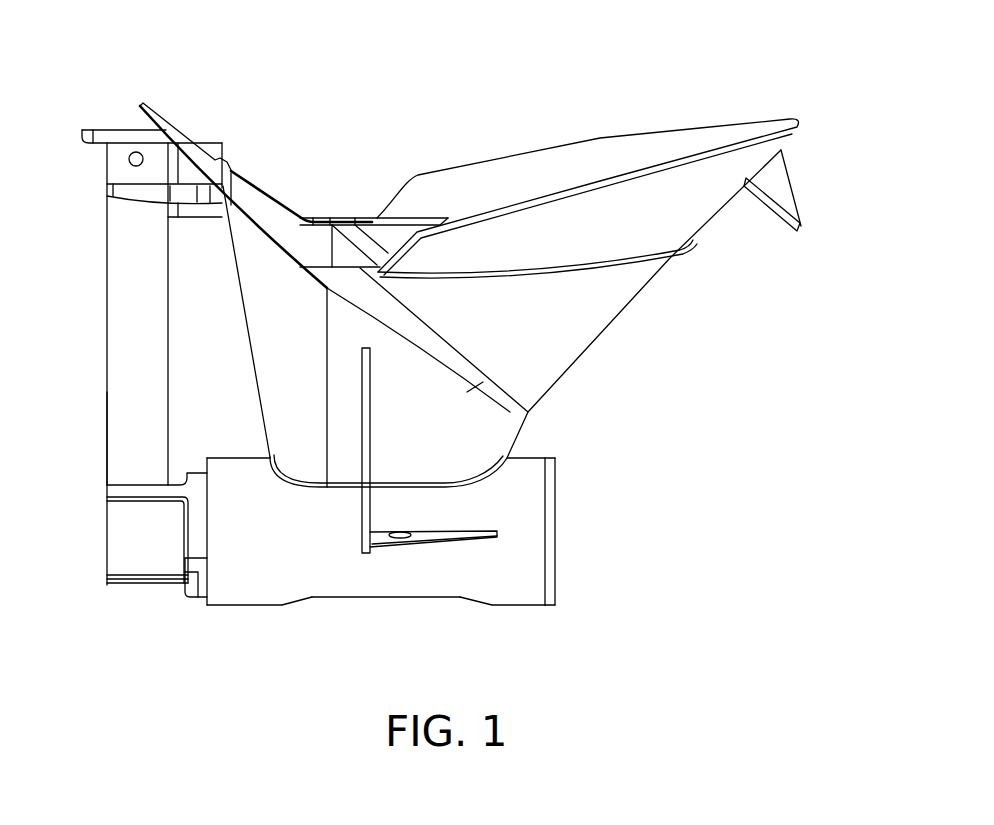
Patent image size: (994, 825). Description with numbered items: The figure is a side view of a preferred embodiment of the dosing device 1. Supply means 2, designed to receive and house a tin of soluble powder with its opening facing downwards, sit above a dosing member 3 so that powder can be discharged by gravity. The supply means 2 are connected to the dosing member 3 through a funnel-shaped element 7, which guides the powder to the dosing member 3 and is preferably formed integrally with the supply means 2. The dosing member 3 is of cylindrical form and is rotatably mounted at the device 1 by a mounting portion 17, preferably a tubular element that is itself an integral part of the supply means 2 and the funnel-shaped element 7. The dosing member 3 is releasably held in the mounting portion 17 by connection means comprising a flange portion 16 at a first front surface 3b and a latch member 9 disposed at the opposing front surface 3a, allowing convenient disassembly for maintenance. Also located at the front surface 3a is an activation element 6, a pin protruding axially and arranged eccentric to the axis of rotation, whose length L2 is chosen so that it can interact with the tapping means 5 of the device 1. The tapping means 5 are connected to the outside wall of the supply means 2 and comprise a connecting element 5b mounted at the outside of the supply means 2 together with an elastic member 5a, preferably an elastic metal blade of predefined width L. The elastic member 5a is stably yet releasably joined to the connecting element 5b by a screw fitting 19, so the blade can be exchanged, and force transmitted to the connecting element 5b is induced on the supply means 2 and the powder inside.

The dosing device 1 is at (653, 49).
The supply means 2 is at (653, 213).
The dosing member 3 is at (418, 585).
The front surface 3a is at (204, 600).
The first front surface 3b is at (517, 593).
The tapping means 5 is at (105, 275).
The elastic member 5a is at (120, 392).
The connecting element 5b is at (163, 127).
The activation element 6 is at (115, 577).
The funnel-shaped element 7 is at (458, 440).
The latch member 9 is at (190, 597).
The flange portion 16 is at (550, 568).
The mounting portion 17 is at (258, 608).
The screw fitting 19 is at (133, 152).
The width L is at (120, 305).
The length of the pin L2 is at (107, 633).